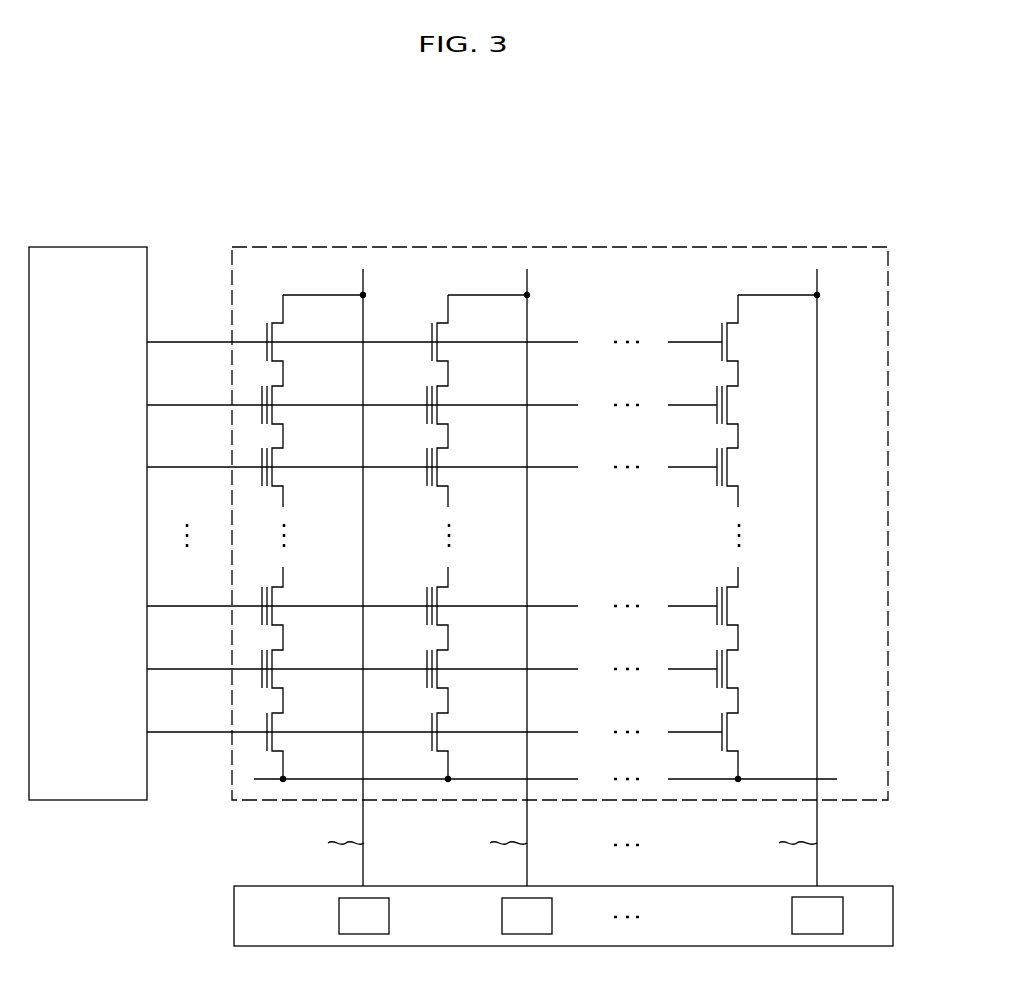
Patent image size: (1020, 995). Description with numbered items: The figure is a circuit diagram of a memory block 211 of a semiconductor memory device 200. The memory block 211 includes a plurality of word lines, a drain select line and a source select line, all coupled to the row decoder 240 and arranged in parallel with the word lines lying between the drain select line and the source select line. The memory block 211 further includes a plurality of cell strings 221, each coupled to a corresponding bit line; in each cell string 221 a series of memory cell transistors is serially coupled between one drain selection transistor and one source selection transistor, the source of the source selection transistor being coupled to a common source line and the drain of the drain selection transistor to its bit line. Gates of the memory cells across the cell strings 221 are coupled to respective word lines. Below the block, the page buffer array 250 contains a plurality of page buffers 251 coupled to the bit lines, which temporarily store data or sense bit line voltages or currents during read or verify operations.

The memory device 200 is at (862, 152).
The row decoder 240 is at (90, 245).
The memory block 211 is at (517, 534).
The cell string 221 is at (272, 284).
The page buffer array 250 is at (529, 916).
The page buffer 251 is at (339, 917).